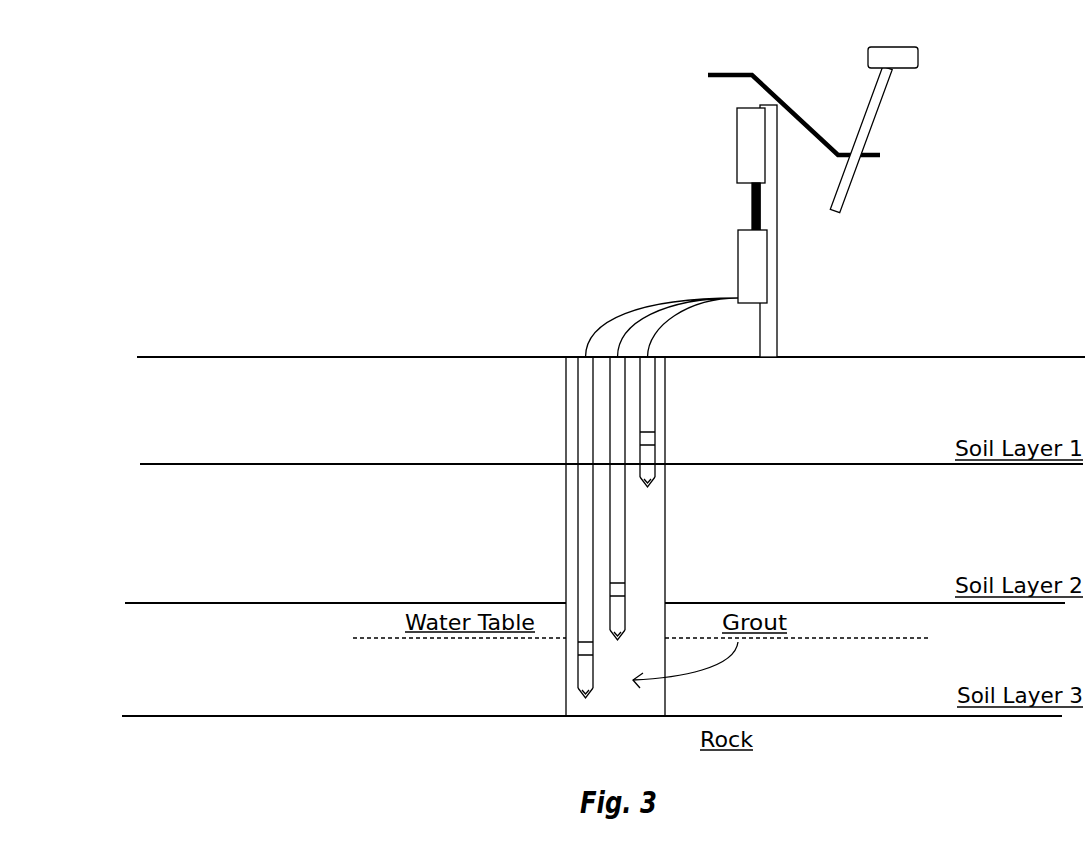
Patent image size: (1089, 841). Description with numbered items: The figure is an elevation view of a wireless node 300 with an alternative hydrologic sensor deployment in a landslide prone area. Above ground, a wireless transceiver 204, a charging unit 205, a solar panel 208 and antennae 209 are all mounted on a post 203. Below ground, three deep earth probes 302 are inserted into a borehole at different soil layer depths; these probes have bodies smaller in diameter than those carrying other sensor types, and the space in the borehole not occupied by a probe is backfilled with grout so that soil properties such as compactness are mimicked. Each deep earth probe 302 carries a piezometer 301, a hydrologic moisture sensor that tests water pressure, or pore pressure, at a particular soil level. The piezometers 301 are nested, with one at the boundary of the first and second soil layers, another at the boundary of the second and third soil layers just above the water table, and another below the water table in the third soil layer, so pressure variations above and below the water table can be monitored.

The wireless node 300 is at (247, 182).
The post 203 is at (778, 297).
The wireless transceiver 204 is at (738, 275).
The charging unit 205 is at (737, 160).
The solar panel 208 is at (730, 72).
The antennae 209 is at (870, 143).
The piezometer 301 is at (625, 610).
The deep earth probe 302 is at (578, 552).